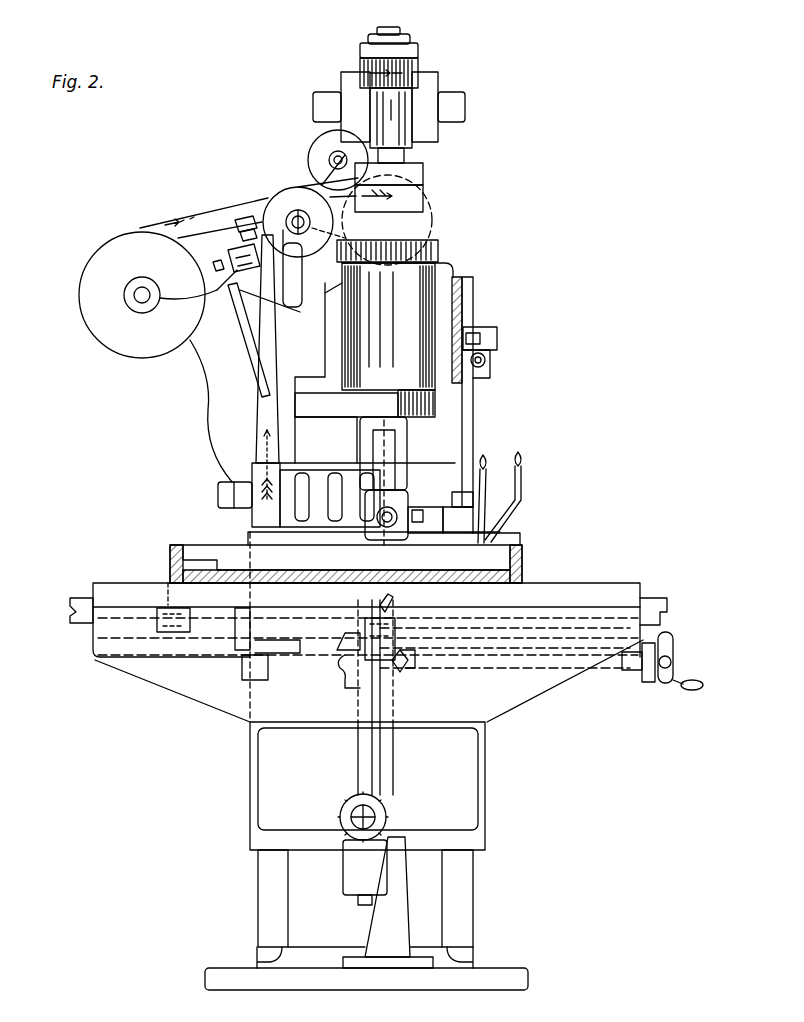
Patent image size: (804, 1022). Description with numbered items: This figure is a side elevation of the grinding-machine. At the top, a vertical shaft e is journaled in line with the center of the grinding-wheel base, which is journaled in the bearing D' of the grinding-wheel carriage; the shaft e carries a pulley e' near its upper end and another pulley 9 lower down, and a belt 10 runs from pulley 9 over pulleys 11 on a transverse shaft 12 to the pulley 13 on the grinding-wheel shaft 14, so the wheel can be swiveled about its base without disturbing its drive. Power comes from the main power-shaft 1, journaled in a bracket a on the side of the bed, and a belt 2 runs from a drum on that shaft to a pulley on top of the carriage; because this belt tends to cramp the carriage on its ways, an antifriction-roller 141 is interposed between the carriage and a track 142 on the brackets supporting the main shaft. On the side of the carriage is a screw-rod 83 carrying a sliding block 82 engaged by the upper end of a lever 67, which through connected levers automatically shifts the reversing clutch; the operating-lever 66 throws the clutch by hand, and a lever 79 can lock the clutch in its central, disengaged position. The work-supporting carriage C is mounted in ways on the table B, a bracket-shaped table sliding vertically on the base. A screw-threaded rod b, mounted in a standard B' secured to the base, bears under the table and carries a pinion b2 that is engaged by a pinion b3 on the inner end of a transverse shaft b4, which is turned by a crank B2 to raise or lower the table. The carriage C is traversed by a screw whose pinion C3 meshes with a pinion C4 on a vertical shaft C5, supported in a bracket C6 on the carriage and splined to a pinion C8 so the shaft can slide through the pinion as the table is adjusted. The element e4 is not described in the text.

The vertical shaft e is at (389, 84).
The pulley e' is at (401, 67).
The pulley 9 is at (413, 170).
The belt 10 is at (420, 190).
The pulleys 11 is at (277, 212).
The transverse shaft 12 is at (299, 212).
The belt 2 is at (240, 200).
The main power-shaft 1 is at (134, 292).
The antifriction-roller 141 is at (240, 275).
The track 142 is at (208, 275).
The bracket a is at (228, 387).
The pulley 13 is at (252, 466).
The grinding-wheel shaft 14 is at (218, 493).
The bearing D' is at (414, 340).
The lever 67 is at (468, 415).
The screw-rod 83 is at (488, 356).
The block 82 is at (493, 373).
The lever 79 is at (488, 487).
The operating-lever 66 is at (524, 500).
The work-supporting carriage C is at (522, 553).
The table B is at (368, 716).
The shaft b4 is at (528, 680).
The crank B2 is at (674, 650).
The pinion C4 is at (345, 646).
The pinion C3 is at (380, 600).
The bracket C6 is at (348, 670).
The pinion b2 is at (422, 662).
The pinion b3 is at (406, 672).
The vertical shaft C5 is at (366, 735).
The screw-threaded rod b is at (392, 768).
The pinion C8 is at (345, 840).
The feed motor e4 is at (342, 873).
The standard B' is at (388, 902).